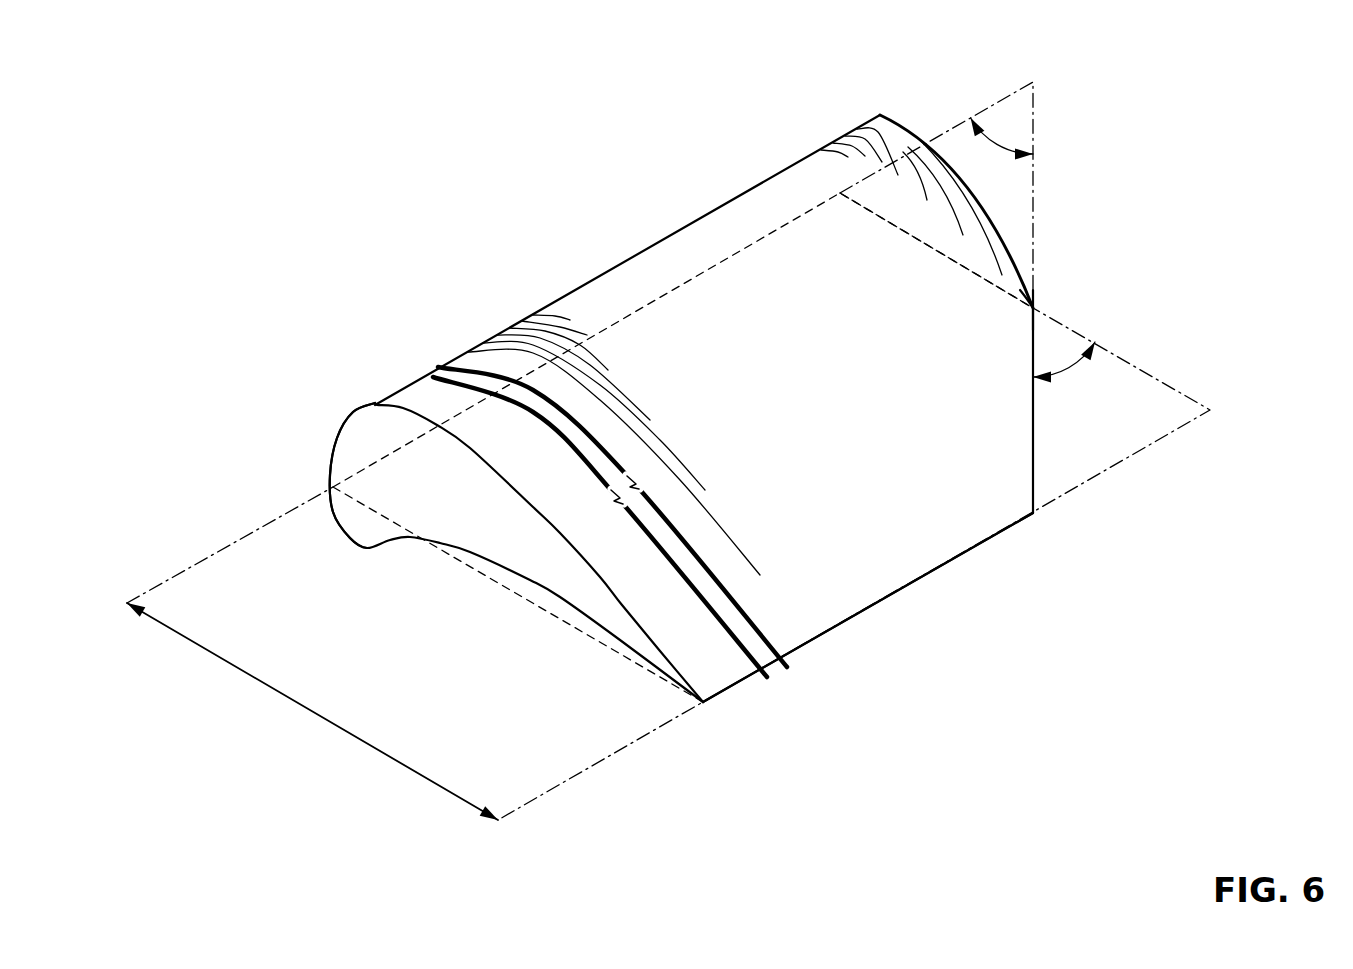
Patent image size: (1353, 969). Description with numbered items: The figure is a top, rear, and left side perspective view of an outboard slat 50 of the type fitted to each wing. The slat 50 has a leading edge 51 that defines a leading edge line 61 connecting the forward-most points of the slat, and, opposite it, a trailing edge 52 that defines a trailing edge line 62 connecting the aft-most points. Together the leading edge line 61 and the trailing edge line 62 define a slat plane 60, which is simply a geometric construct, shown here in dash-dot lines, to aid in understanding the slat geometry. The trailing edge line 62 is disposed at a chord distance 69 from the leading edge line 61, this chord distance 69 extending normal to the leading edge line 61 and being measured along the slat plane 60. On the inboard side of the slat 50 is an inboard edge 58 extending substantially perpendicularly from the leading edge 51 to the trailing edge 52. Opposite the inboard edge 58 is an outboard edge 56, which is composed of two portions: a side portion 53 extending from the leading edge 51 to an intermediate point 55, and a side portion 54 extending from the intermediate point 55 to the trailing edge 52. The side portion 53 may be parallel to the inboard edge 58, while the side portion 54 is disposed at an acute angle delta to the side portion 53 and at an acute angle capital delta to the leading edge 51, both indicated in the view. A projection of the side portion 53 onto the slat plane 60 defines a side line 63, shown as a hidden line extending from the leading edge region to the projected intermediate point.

The outboard slat 50 is at (722, 457).
The leading edge 51 is at (531, 311).
The trailing edge 52 is at (941, 569).
The side portion 53 is at (1007, 260).
The side portion 54 is at (1036, 435).
The intermediate point 55 is at (1023, 317).
The outboard edge 56 is at (1064, 152).
The inboard edge 58 is at (622, 607).
The slat plane 60 is at (427, 470).
The leading edge line 61 is at (712, 263).
The trailing edge line 62 is at (832, 628).
The side line 63 is at (873, 214).
The chord distance 69 is at (312, 712).